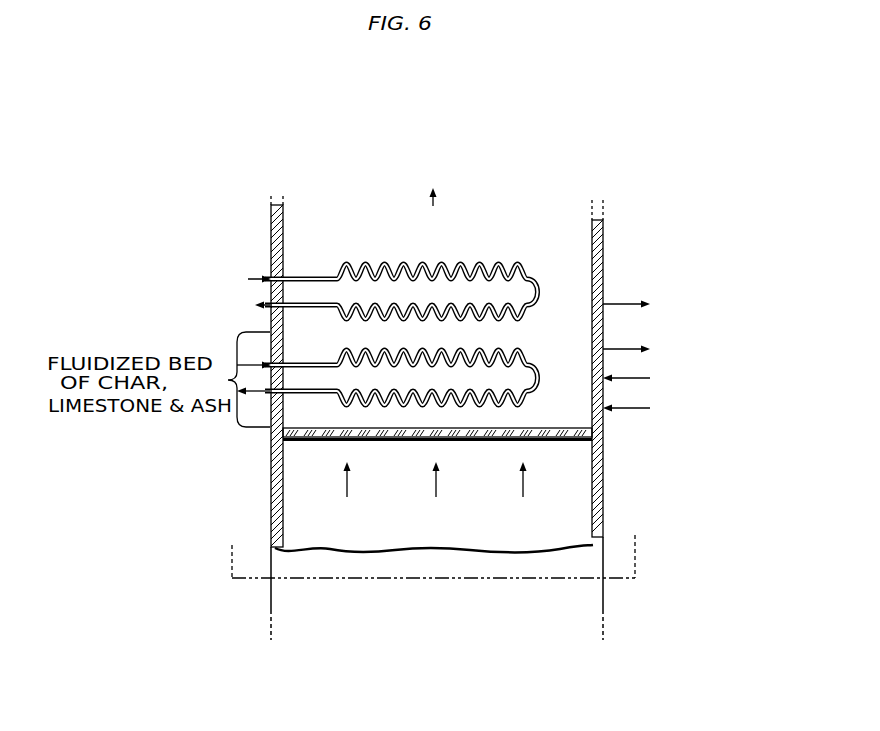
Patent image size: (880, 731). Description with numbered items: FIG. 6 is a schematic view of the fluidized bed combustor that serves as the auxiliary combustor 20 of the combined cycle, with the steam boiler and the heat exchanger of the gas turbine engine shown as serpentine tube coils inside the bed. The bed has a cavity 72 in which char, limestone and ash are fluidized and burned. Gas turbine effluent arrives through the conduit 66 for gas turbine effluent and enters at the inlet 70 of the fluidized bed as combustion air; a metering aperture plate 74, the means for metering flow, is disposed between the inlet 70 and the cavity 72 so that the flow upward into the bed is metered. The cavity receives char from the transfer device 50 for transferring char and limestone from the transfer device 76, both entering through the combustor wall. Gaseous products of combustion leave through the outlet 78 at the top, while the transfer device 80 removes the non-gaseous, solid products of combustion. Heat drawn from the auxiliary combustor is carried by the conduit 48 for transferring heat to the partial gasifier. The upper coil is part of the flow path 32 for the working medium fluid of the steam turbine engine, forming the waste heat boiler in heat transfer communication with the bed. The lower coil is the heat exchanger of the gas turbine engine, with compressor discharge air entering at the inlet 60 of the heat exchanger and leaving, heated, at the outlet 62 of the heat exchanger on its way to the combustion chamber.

The auxiliary combustor 20 is at (604, 474).
The flow path for a working medium fluid 32 is at (256, 302).
The conduit for transferring heat 48 is at (614, 349).
The transfer device for transferring char 50 is at (616, 378).
The inlet of the heat exchanger 60 is at (244, 364).
The outlet of the heat exchanger 62 is at (254, 396).
The conduit for gas turbine effluent 66 is at (604, 612).
The inlet of the fluidized bed 70 is at (604, 578).
The cavity 72 is at (452, 339).
The metering aperture plate 74 is at (548, 440).
The transfer device for limestone 76 is at (615, 408).
The outlet for the gaseous products of combustion 78 is at (472, 206).
The transfer device for removing the non-gaseous products of combustion 80 is at (615, 304).